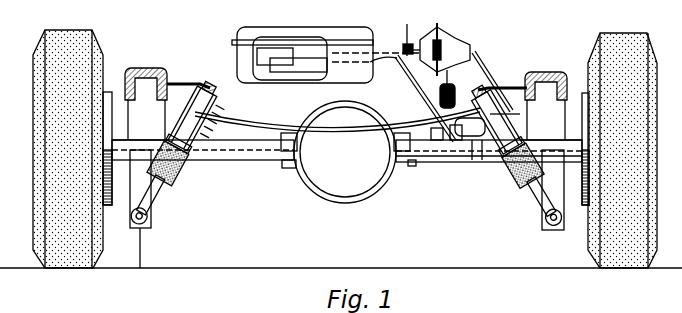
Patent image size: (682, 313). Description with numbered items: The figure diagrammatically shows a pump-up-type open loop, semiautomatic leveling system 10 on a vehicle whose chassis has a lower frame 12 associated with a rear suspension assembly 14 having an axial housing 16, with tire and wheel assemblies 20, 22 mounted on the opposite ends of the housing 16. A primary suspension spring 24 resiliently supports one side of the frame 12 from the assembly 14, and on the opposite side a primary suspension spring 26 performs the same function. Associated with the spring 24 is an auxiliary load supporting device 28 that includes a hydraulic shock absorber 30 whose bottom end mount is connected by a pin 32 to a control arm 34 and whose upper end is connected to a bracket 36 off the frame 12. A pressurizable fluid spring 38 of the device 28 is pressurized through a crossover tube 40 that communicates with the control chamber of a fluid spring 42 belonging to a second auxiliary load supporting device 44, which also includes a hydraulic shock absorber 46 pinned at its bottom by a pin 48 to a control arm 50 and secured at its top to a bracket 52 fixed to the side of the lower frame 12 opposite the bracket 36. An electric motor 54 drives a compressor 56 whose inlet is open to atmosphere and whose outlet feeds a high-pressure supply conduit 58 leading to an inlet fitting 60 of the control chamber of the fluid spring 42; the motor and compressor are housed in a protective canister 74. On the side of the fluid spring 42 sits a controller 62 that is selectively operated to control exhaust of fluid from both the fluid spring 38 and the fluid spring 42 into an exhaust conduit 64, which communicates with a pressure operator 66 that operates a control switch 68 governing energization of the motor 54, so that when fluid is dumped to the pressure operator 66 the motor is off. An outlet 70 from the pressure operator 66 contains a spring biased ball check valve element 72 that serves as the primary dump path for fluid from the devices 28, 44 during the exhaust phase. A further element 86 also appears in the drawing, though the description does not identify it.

The semiautomatic leveling system 10 is at (497, 68).
The lower frame 12 is at (152, 68).
The rear suspension assembly 14 is at (500, 127).
The axial housing 16 is at (455, 142).
The tire and wheel assembly 20 is at (76, 250).
The tire and wheel assembly 22 is at (630, 247).
The primary suspension spring 24 is at (216, 122).
The primary suspension spring 26 is at (478, 145).
The auxiliary load supporting device 28 is at (208, 150).
The hydraulic shock absorber 30 is at (152, 207).
The pin 32 is at (146, 226).
The control arm 34 is at (140, 230).
The bracket 36 is at (176, 85).
The pressurizable fluid spring 38 is at (176, 185).
The crossover tube 40 is at (378, 145).
The fluid spring 42 is at (505, 168).
The auxiliary load supporting device 44 is at (414, 163).
The hydraulic shock absorber 46 is at (531, 206).
The pin 48 is at (545, 232).
The control arm 50 is at (550, 230).
The bracket 52 is at (525, 80).
The electric motor 54 is at (318, 72).
The compressor 56 is at (276, 62).
The high-pressure supply conduit 58 is at (375, 52).
The inlet fitting 60 is at (486, 153).
The controller 62 is at (512, 114).
The exhaust conduit 64 is at (476, 56).
The pressure operator 66 is at (450, 30).
The control switch 68 is at (408, 58).
The outlet 70 is at (426, 92).
The spring biased ball check valve element 72 is at (440, 108).
The canister 74 is at (263, 31).
The bracket 86 is at (436, 142).